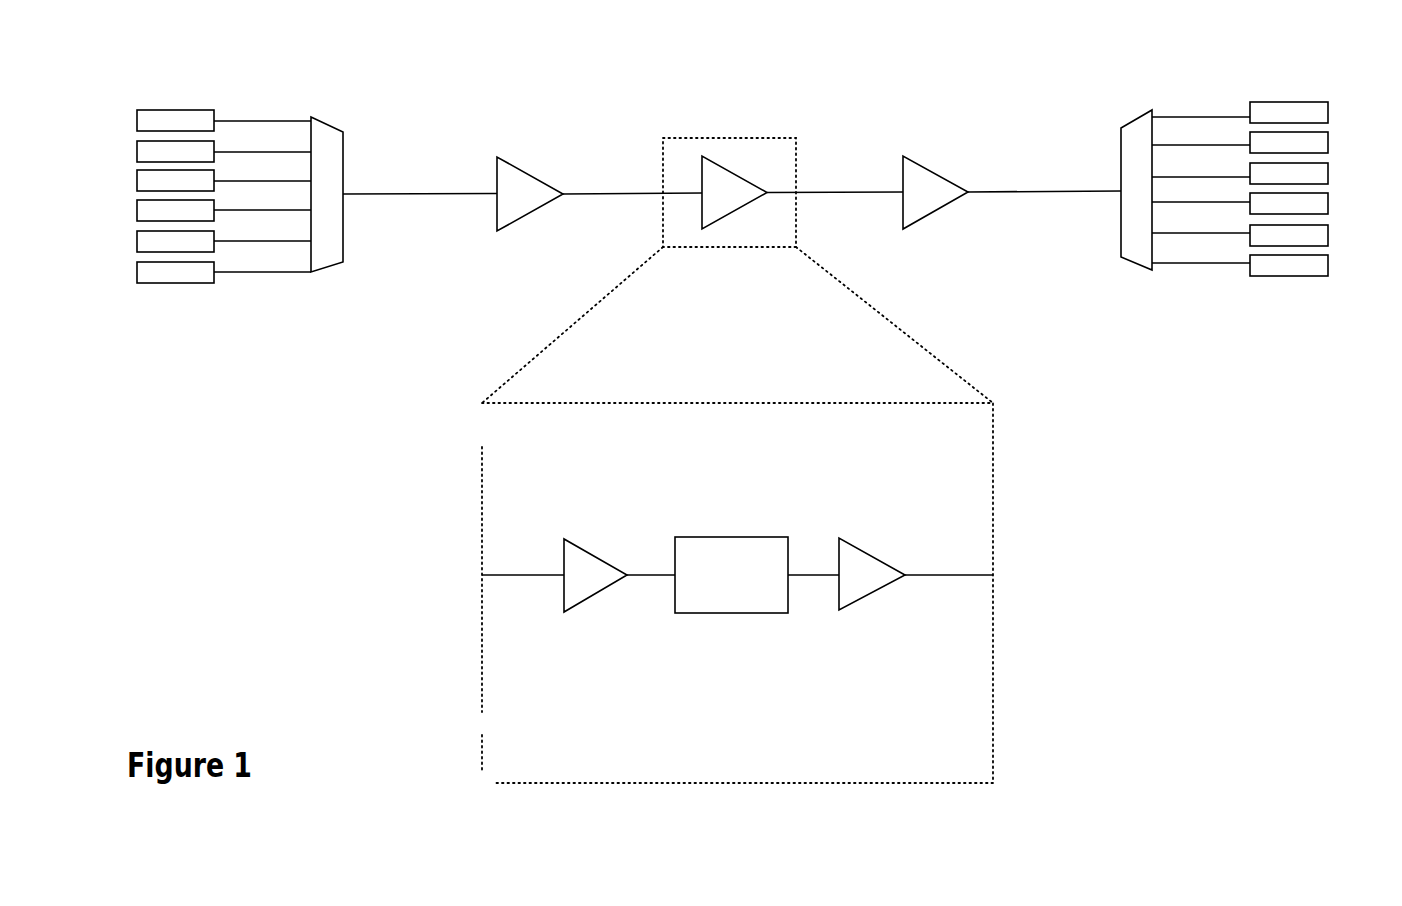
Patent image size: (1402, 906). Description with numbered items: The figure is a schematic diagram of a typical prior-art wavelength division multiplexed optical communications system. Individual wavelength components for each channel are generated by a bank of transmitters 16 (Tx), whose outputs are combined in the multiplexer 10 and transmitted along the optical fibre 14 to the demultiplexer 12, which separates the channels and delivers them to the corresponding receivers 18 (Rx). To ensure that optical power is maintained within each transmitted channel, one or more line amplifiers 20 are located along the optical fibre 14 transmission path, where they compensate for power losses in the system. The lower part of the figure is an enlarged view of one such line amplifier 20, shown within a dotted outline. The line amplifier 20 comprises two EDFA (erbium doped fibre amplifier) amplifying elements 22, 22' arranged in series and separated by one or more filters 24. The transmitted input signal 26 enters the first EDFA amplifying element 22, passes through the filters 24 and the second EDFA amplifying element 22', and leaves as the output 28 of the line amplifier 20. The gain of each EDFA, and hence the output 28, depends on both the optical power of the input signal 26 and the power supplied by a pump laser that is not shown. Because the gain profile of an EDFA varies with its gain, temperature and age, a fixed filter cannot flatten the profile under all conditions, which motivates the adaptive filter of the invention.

The multiplexer 10 is at (328, 273).
The demultiplexer 12 is at (1120, 263).
The optical fibre 14 is at (437, 185).
The transmitters 16 is at (135, 120).
The receivers 18 is at (1335, 105).
The line amplifier 20 is at (525, 225).
The EDFA amplifying element 22 is at (598, 597).
The EDFA amplifying element 22' is at (893, 586).
The filters 24 is at (725, 618).
The input signal 26 is at (523, 592).
The output 28 is at (949, 556).